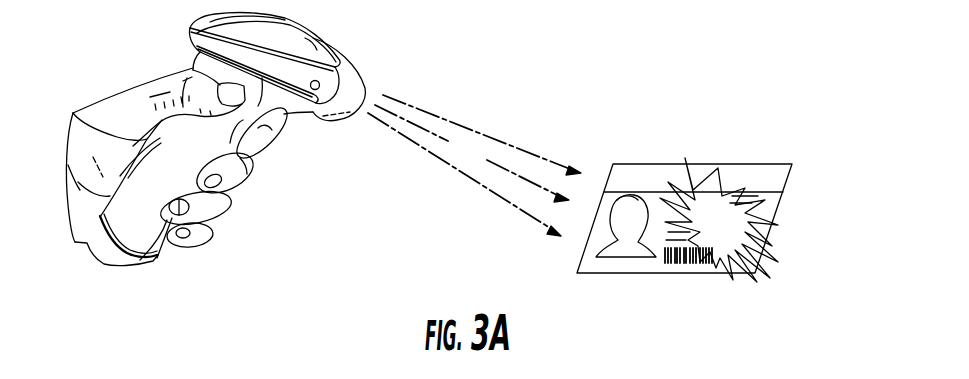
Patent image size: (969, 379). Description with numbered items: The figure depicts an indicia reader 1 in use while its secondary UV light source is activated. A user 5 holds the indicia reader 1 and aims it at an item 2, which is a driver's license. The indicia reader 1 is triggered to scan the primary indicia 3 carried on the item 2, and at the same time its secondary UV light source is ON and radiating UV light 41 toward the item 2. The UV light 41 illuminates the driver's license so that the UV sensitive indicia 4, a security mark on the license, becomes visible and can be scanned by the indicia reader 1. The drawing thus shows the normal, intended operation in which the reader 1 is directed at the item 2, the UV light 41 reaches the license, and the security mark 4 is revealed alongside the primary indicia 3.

The indicia reader 1 is at (188, 56).
The user 5 is at (113, 136).
The UV light 41 is at (465, 182).
The item 2 is at (705, 162).
The primary indicia 3 is at (675, 263).
The UV sensitive indicia 4 is at (744, 232).